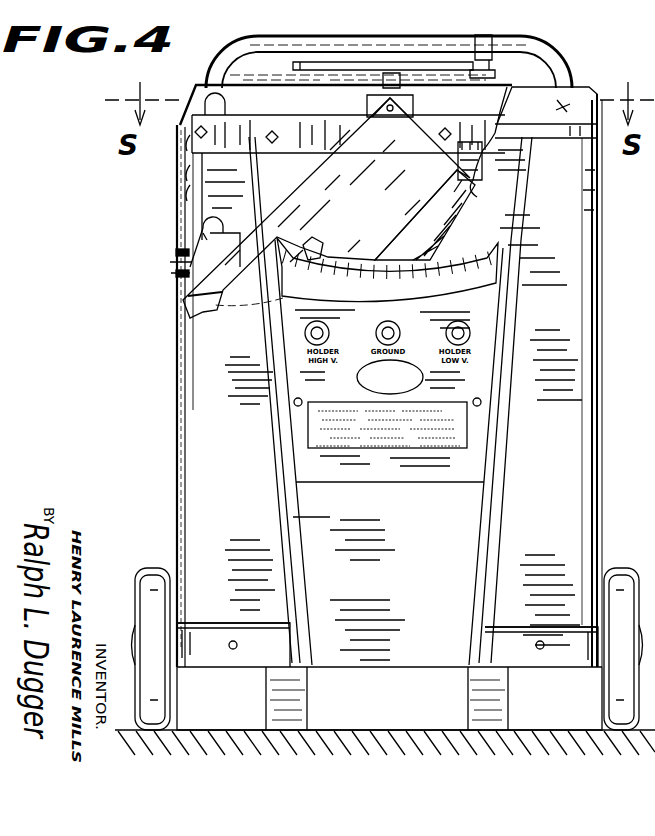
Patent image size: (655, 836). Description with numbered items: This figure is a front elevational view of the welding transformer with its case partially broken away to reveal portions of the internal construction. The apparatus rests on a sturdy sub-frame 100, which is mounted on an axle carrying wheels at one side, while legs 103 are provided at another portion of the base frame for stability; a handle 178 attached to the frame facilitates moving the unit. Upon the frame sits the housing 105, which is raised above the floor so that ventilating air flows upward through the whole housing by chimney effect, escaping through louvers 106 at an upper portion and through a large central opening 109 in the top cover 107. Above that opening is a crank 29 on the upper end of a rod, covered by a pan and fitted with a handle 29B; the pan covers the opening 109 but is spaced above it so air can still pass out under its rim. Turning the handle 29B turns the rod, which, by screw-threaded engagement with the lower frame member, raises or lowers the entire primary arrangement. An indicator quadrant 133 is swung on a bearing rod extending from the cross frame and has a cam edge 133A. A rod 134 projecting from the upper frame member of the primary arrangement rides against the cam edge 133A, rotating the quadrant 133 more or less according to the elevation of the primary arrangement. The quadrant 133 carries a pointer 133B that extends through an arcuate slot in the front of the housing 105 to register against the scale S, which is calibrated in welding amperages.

The handle 178 is at (525, 48).
The crank 29 is at (408, 67).
The handle 29B is at (483, 38).
The central opening 109 is at (488, 72).
The top cover 107 is at (565, 97).
The housing 105 is at (578, 330).
The louvers 106 is at (180, 180).
The rod 134 is at (477, 197).
The scale S is at (505, 262).
The indicator quadrant 133 is at (350, 153).
The cam edge 133A is at (405, 247).
The pointer 133B is at (312, 245).
The sub-frame 100 is at (225, 655).
The legs 103 is at (295, 707).